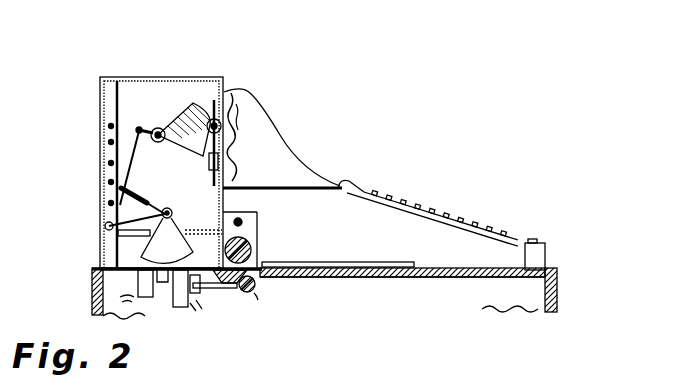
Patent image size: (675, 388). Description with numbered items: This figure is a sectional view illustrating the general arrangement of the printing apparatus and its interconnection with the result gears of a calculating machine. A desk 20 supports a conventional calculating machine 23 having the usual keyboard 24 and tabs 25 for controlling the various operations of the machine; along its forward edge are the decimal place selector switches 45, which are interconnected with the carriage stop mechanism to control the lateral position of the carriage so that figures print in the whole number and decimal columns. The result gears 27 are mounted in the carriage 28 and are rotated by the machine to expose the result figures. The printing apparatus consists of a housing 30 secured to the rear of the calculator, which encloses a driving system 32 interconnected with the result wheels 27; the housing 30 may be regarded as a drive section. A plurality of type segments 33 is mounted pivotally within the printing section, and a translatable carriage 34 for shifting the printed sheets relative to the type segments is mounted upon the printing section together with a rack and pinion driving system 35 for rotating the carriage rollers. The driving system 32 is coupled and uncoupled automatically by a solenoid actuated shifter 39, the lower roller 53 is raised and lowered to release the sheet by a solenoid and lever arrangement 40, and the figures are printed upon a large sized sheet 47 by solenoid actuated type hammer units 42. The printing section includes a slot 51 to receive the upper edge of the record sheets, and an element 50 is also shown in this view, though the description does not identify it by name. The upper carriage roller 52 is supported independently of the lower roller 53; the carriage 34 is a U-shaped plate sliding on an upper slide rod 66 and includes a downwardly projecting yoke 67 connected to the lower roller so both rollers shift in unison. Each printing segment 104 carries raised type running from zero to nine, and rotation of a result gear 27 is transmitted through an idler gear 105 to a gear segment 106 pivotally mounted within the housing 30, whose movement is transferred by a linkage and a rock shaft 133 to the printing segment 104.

The desk 20 is at (558, 285).
The calculating machine 23 is at (460, 270).
The keyboard 24 is at (514, 241).
The tabs 25 is at (430, 210).
The result gears 27 is at (237, 128).
The carriage 28 is at (296, 160).
The housing 30 is at (99, 101).
The driving system 32 is at (176, 106).
The type segments 33 is at (179, 225).
The translatable carriage 34 is at (261, 213).
The rack and pinion driving system 35 is at (206, 234).
The solenoid actuated shifter 39 is at (207, 169).
The solenoid and lever arrangement 40 is at (228, 299).
The type hammer units 42 is at (152, 284).
The decimal place selector switches 45 is at (535, 240).
The large sized sheet 47 is at (305, 266).
The slide plate 50 is at (378, 262).
The slot 51 is at (100, 258).
The upper carriage roller 52 is at (251, 243).
The lower roller 53 is at (250, 291).
The upper slide rod 66 is at (238, 219).
The yoke 67 is at (259, 284).
The printing segment 104 is at (167, 240).
The idler gear 105 is at (213, 120).
The gear segment 106 is at (191, 139).
The rock shaft 133 is at (108, 144).